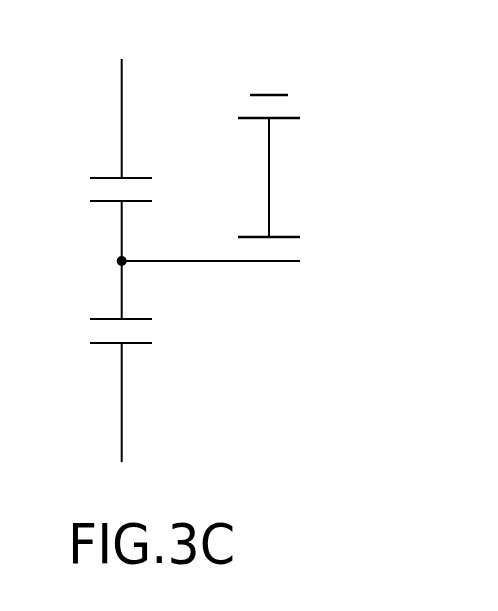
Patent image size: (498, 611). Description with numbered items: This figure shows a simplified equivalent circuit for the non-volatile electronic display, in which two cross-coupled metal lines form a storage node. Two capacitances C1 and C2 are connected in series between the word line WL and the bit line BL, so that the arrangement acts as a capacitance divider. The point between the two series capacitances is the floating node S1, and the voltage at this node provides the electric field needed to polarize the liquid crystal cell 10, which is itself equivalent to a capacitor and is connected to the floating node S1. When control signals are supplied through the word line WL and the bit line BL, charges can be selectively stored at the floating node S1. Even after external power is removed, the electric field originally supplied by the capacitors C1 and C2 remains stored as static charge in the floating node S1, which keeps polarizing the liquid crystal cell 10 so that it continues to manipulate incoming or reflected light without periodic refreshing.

The liquid crystal cell 10 is at (293, 248).
The word line WL is at (124, 101).
The bit line BL is at (126, 420).
The capacitance C1 is at (116, 302).
The capacitance C2 is at (116, 201).
The floating node S1 is at (192, 254).